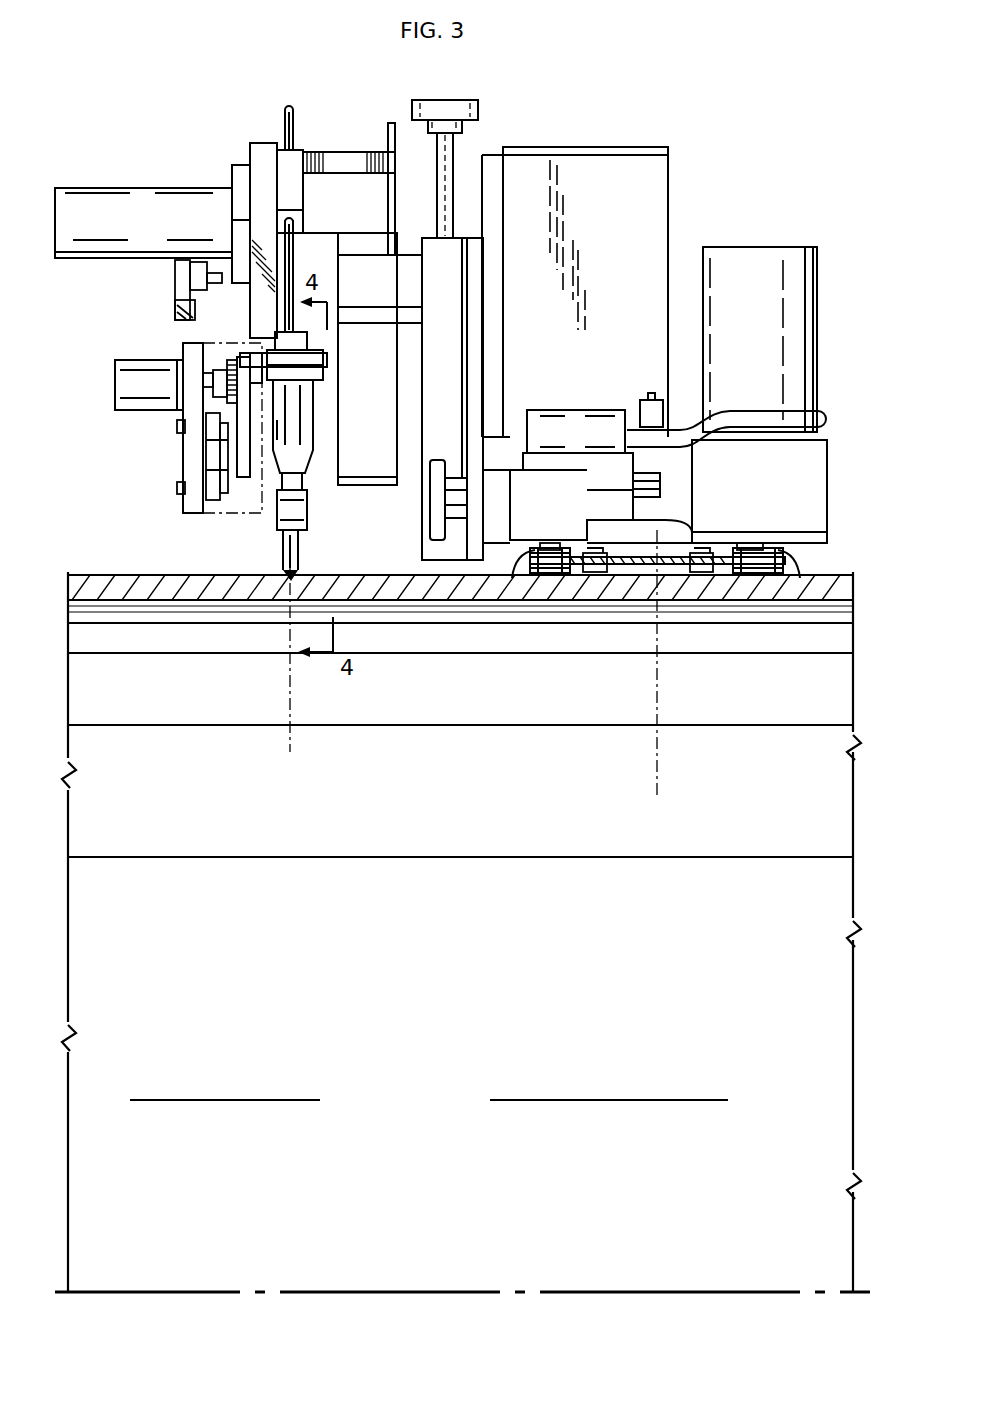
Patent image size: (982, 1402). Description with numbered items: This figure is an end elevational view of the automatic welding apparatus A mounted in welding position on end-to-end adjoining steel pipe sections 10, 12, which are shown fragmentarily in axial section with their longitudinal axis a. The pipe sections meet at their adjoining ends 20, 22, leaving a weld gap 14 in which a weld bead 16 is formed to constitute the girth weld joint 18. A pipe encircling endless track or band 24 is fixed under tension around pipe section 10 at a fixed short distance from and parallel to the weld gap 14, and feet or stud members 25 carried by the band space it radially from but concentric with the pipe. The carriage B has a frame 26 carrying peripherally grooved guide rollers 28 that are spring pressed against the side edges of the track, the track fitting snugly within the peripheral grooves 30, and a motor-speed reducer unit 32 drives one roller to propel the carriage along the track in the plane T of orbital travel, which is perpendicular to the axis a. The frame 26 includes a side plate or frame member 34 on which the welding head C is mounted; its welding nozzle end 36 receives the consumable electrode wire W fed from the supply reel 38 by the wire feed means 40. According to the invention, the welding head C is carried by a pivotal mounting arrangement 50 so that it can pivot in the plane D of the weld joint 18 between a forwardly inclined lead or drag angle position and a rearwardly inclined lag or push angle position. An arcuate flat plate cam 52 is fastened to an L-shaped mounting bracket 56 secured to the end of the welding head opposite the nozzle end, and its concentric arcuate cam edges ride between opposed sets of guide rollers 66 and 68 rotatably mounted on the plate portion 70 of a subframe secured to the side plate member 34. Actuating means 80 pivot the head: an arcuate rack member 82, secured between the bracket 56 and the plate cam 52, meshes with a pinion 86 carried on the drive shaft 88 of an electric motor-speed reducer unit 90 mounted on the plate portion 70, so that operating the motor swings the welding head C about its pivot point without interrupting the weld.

The pipe section 10 is at (818, 583).
The pipe section 12 is at (137, 580).
The weld gap 14 is at (295, 572).
The weld bead 16 is at (287, 605).
The girth weld joint 18 is at (282, 606).
The adjoining end 20 is at (298, 592).
The adjoining end 22 is at (277, 600).
The pipe encircling endless track or band 24 is at (667, 557).
The feet or stud members 25 is at (595, 574).
The frame 26 is at (810, 488).
The guide rollers 28 is at (543, 572).
The peripheral grooves 30 is at (522, 576).
The motor-speed reducer unit 32 is at (790, 287).
The side plate or frame member 34 is at (490, 197).
The welding nozzle end 36 is at (298, 538).
The supply reel 38 is at (390, 140).
The wire feed means 40 is at (283, 175).
The pivotal mounting arrangement 50 is at (162, 418).
The arcuate shaped flat plate cam 52 is at (213, 460).
The L-shaped mounting bracket 56 is at (318, 357).
The guide rollers 66 is at (205, 435).
The guide rollers 68 is at (208, 488).
The plate portion 70 is at (192, 352).
The actuating means 80 is at (187, 317).
The arcuate rack member 82 is at (397, 457).
The pinion 86 is at (232, 390).
The drive shaft 88 is at (205, 383).
The electric motor-speed reducer unit 90 is at (130, 365).
The automatic welding apparatus A is at (248, 117).
The carriage B is at (845, 438).
The welding head C is at (325, 400).
The plane of the weld joint D is at (295, 722).
The plane of orbital travel T is at (660, 688).
The consumable electrode wire W is at (312, 150).
The longitudinal axis a is at (130, 1290).